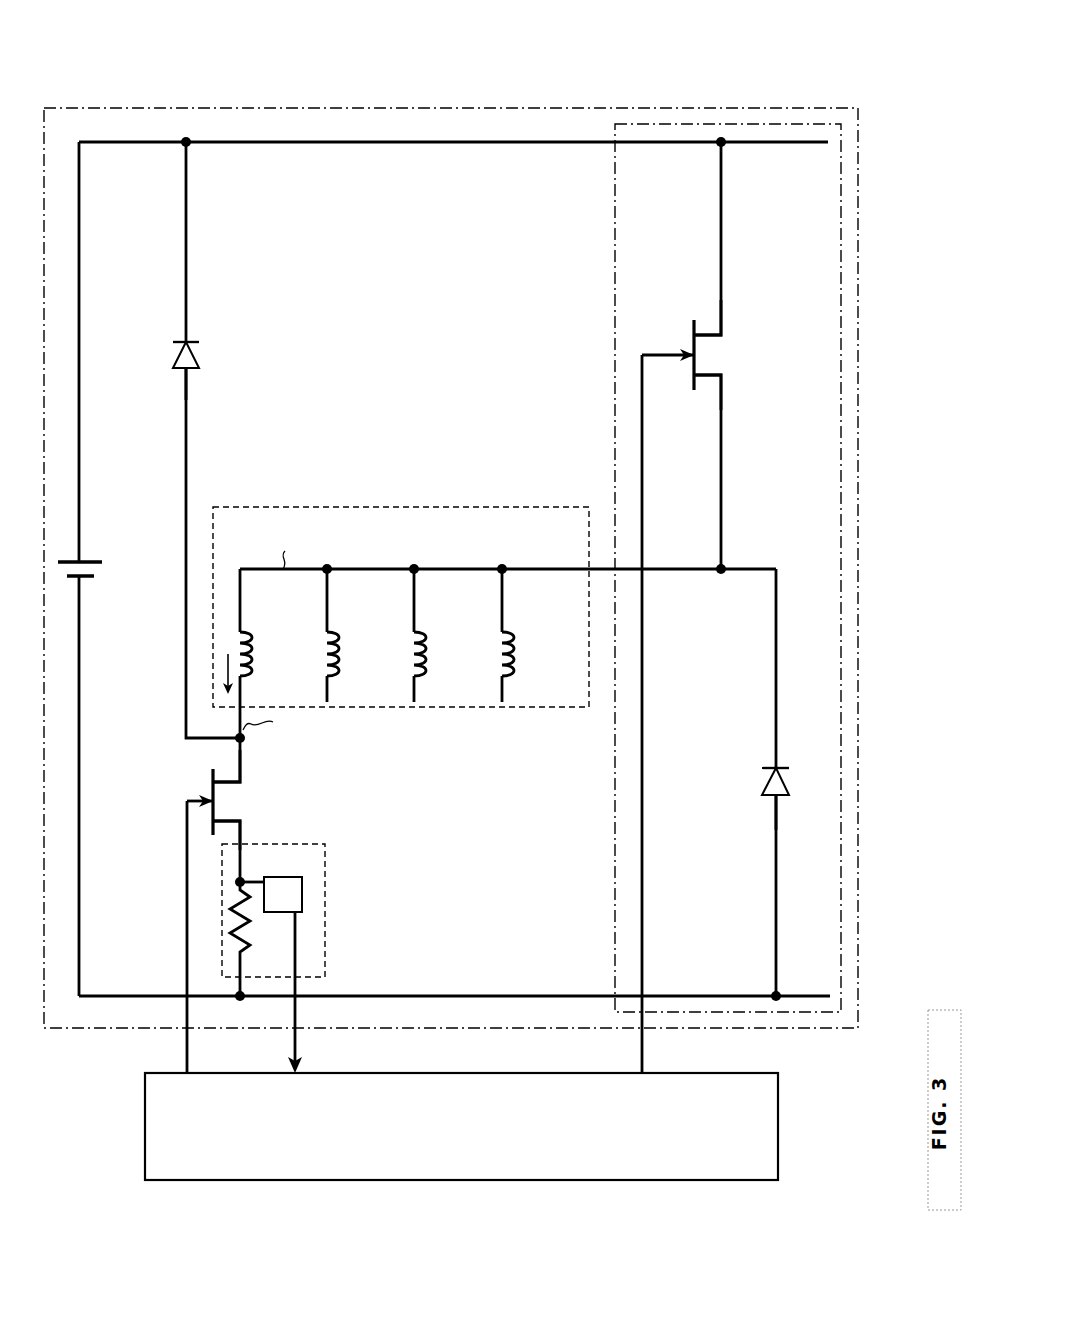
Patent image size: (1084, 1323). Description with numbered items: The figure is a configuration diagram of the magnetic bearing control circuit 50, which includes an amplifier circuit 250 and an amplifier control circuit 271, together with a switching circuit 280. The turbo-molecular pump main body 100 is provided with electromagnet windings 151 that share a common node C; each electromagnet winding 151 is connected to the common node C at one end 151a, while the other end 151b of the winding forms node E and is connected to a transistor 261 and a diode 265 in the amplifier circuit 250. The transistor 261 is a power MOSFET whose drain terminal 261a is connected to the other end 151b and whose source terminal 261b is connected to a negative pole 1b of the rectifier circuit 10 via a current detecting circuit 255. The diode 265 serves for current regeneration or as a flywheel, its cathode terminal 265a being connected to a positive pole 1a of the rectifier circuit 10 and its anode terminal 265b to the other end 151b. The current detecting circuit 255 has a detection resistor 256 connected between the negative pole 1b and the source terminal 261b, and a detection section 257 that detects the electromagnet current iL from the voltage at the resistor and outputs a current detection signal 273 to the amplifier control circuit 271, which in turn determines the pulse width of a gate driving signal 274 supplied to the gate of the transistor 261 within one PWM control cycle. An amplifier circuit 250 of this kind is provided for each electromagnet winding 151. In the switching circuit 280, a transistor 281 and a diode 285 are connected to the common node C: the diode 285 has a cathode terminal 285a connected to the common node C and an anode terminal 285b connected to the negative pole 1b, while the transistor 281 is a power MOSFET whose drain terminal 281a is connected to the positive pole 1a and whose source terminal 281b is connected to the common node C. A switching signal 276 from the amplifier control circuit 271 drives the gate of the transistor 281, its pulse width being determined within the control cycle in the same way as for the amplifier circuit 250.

The magnetic bearing control circuit 50 is at (480, 27).
The amplifier circuit 250 is at (344, 108).
The switching circuit 280 is at (728, 122).
The diode 265 is at (198, 357).
The cathode terminal 265a is at (190, 342).
The anode terminal 265b is at (190, 373).
The transistor 281 is at (722, 349).
The drain terminal 281a is at (721, 336).
The source terminal 281b is at (721, 375).
The switching signal 276 is at (640, 1057).
The turbo-molecular pump main body 100 is at (402, 507).
The electromagnet winding 151 is at (254, 650).
The one end of the winding 151a is at (245, 632).
The other end of the winding 151b is at (245, 678).
The rectifier circuit 10 is at (99, 567).
The positive pole 1a is at (80, 528).
The negative pole 1b is at (80, 604).
The transistor 261 is at (240, 798).
The drain terminal 261a is at (243, 782).
The source terminal 261b is at (243, 821).
The gate driving signal 274 is at (188, 1013).
The current detecting circuit 255 is at (324, 908).
The detection section 257 is at (283, 877).
The detection resistor 256 is at (242, 926).
The current detection signal 273 is at (297, 1013).
The diode 285 is at (762, 782).
The cathode terminal 285a is at (772, 768).
The anode terminal 285b is at (772, 795).
The amplifier control circuit 271 is at (460, 1184).